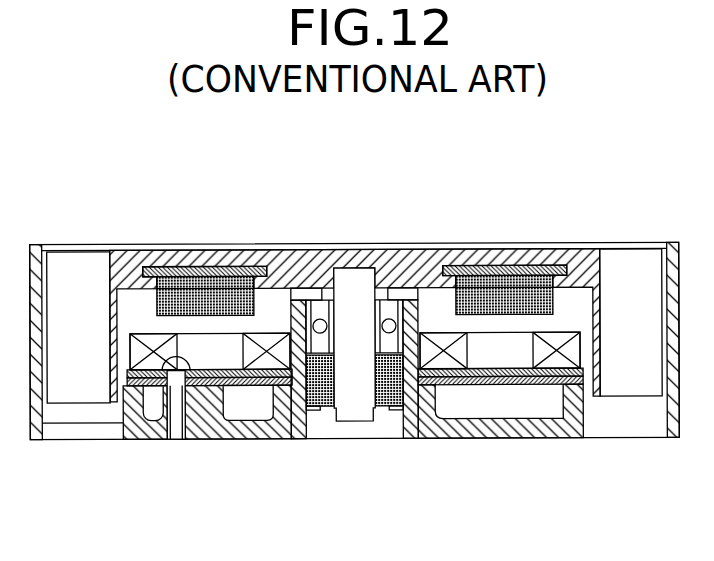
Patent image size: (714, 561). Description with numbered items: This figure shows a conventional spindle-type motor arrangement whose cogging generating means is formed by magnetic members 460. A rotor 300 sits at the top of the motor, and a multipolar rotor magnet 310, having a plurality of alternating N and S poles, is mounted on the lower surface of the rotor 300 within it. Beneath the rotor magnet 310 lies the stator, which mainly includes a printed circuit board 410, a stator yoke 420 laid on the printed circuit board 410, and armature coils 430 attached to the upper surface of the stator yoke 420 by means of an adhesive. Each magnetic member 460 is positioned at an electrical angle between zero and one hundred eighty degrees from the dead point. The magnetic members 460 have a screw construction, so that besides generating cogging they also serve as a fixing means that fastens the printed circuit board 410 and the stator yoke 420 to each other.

The rotor 300 is at (404, 262).
The multipolar rotor magnet 310 is at (228, 292).
The armature coils 430 is at (267, 336).
The printed circuit board 410 is at (248, 385).
The stator yoke 420 is at (208, 386).
The magnetic members 460 is at (168, 415).